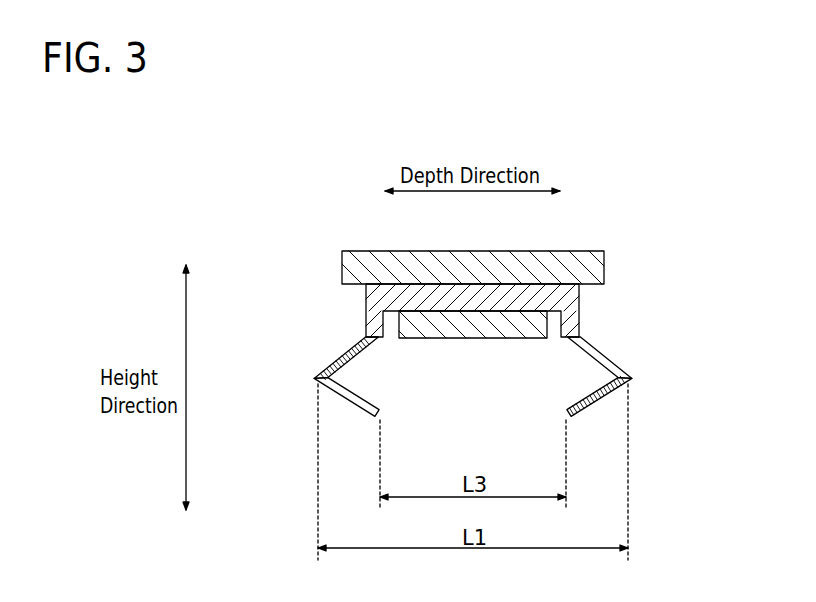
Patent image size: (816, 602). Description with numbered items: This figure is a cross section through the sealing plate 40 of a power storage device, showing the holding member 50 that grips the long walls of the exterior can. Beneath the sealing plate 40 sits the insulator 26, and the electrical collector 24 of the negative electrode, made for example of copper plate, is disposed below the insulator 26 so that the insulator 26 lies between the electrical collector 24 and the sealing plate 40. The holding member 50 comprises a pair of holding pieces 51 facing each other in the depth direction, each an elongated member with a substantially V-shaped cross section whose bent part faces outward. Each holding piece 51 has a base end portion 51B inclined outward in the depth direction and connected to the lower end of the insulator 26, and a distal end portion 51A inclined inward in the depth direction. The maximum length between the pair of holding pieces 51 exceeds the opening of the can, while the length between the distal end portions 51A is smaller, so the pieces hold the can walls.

The sealing plate 40 is at (604, 269).
The insulator 26 is at (579, 300).
The electrical collector 24 is at (498, 339).
The holding member 50 is at (293, 432).
The holding piece 51 is at (256, 343).
The distal end portion 51A is at (341, 397).
The base end portion 51B is at (343, 356).